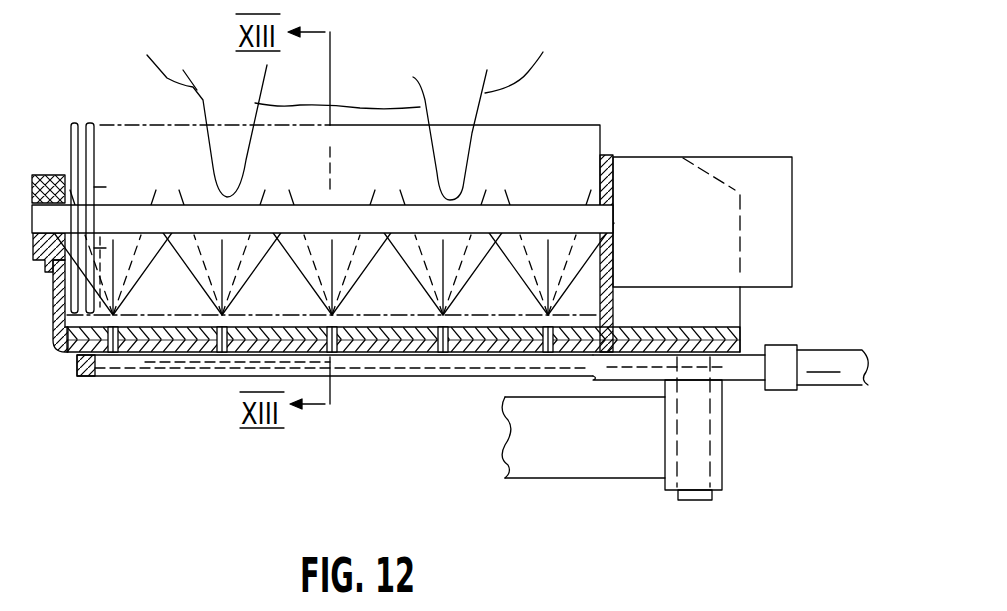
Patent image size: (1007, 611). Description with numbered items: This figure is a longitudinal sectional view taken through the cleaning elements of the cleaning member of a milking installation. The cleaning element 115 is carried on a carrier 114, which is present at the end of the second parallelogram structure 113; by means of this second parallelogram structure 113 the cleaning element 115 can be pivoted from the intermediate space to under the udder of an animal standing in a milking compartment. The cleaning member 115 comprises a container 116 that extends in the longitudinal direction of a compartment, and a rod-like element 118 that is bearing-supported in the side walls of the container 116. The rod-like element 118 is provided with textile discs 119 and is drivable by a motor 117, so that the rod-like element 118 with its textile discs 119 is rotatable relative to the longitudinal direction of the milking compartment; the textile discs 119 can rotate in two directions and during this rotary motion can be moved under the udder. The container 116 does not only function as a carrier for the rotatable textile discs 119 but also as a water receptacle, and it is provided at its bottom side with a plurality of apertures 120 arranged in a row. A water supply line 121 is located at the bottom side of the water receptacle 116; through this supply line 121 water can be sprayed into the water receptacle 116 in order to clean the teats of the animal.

The second parallelogram structure 113 is at (593, 452).
The carrier 114 is at (53, 342).
The cleaning element 115 is at (175, 384).
The container 116 is at (400, 298).
The motor 117 is at (733, 160).
The rod-like element 118 is at (380, 205).
The textile discs 119 is at (88, 123).
The apertures 120 is at (417, 358).
The water supply line 121 is at (495, 360).